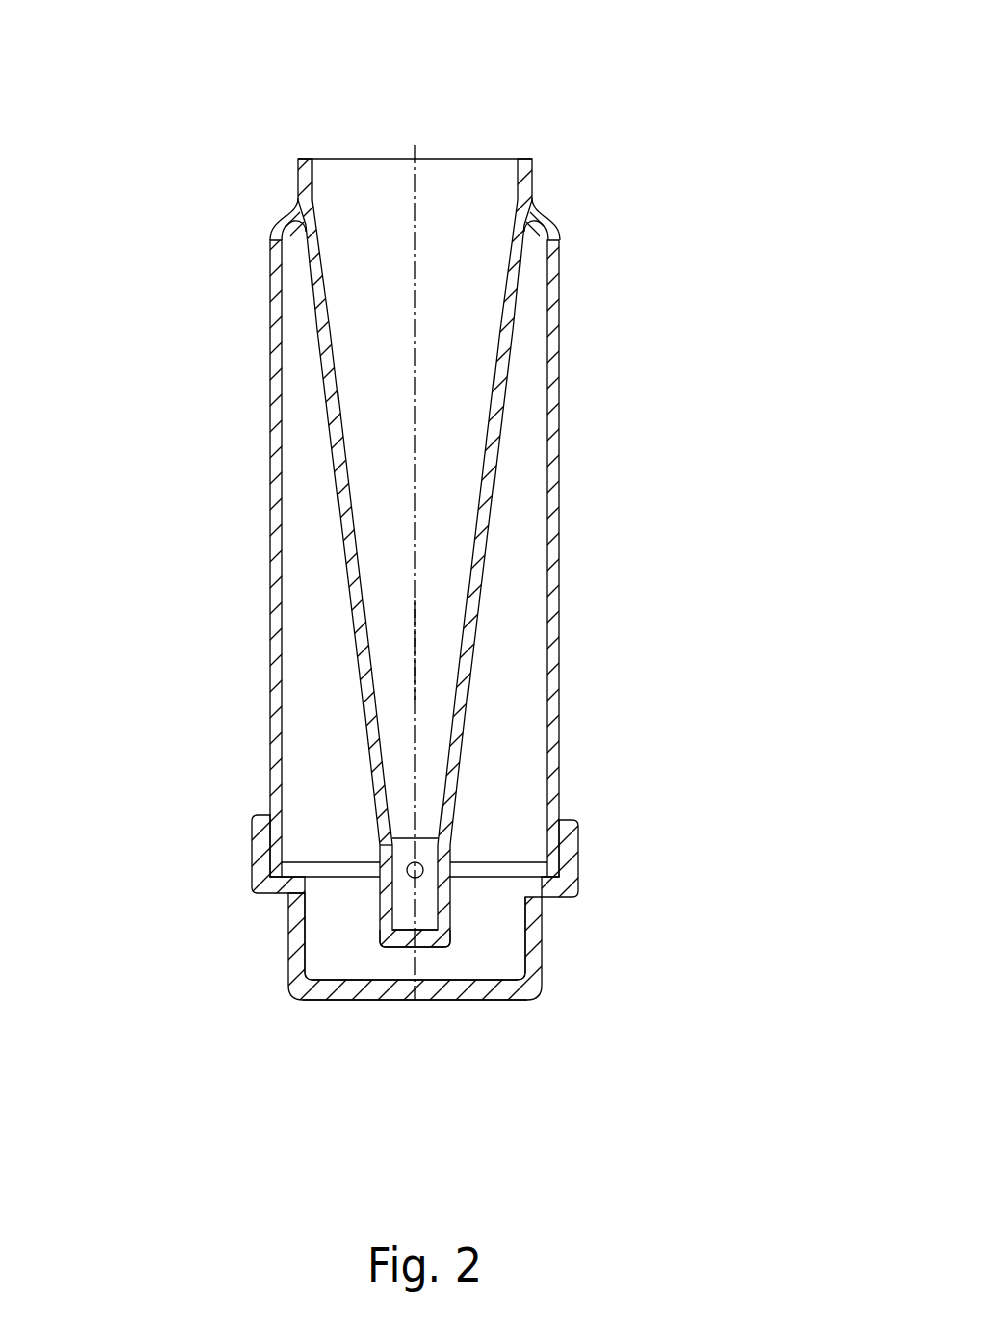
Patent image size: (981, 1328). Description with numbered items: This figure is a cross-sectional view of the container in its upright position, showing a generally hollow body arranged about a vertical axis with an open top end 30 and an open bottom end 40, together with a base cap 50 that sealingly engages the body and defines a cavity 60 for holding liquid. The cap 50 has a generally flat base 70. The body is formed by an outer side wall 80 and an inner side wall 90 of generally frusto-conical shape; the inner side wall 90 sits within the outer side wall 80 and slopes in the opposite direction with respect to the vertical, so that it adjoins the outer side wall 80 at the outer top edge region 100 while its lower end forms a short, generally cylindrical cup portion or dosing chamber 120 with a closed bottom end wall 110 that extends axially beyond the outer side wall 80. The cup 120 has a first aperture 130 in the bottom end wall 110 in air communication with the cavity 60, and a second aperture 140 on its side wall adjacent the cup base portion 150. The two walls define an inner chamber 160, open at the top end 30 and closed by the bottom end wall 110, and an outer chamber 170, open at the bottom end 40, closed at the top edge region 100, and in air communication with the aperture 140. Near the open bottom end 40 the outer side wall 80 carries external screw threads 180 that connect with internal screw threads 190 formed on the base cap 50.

The open top end 30 is at (482, 165).
The outer top edge region 100 is at (543, 220).
The inner chamber 160 is at (362, 332).
The outer side wall 80 is at (550, 352).
The inner side wall 90 is at (337, 414).
The outer chamber 170 is at (525, 495).
The dosing chamber 120 is at (380, 862).
The cup base portion 150 is at (425, 838).
The open bottom end 40 is at (330, 870).
The external screw threads 180 is at (565, 822).
The internal screw threads 190 is at (560, 852).
The second aperture 140 is at (408, 874).
The base cap 50 is at (543, 945).
The cavity 60 is at (503, 960).
The flat base 70 is at (348, 1000).
The first aperture 130 is at (418, 948).
The bottom end wall 110 is at (393, 977).